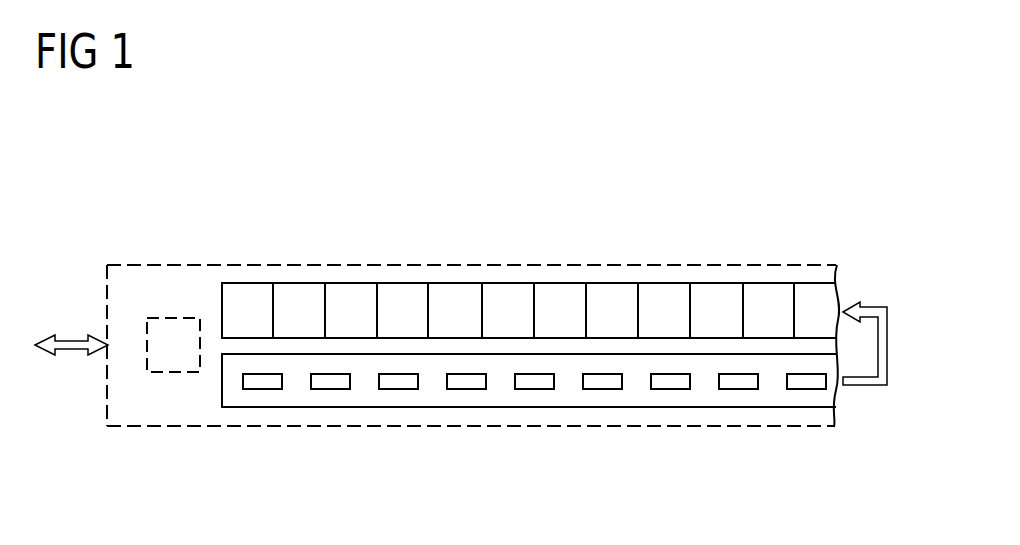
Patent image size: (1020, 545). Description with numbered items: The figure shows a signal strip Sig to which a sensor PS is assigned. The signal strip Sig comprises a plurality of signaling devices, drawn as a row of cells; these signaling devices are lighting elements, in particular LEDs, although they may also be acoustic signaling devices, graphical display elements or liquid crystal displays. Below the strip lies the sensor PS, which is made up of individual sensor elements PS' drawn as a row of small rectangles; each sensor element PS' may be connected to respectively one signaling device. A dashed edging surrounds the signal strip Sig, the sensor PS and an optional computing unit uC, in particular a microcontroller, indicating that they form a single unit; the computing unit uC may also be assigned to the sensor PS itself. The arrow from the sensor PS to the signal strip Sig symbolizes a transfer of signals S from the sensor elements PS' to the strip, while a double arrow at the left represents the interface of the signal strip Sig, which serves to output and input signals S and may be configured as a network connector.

The signal strip Sig is at (405, 300).
The sensor PS is at (534, 437).
The sensor element PS' is at (529, 417).
The computing unit uC is at (172, 352).
The signals S is at (910, 270).